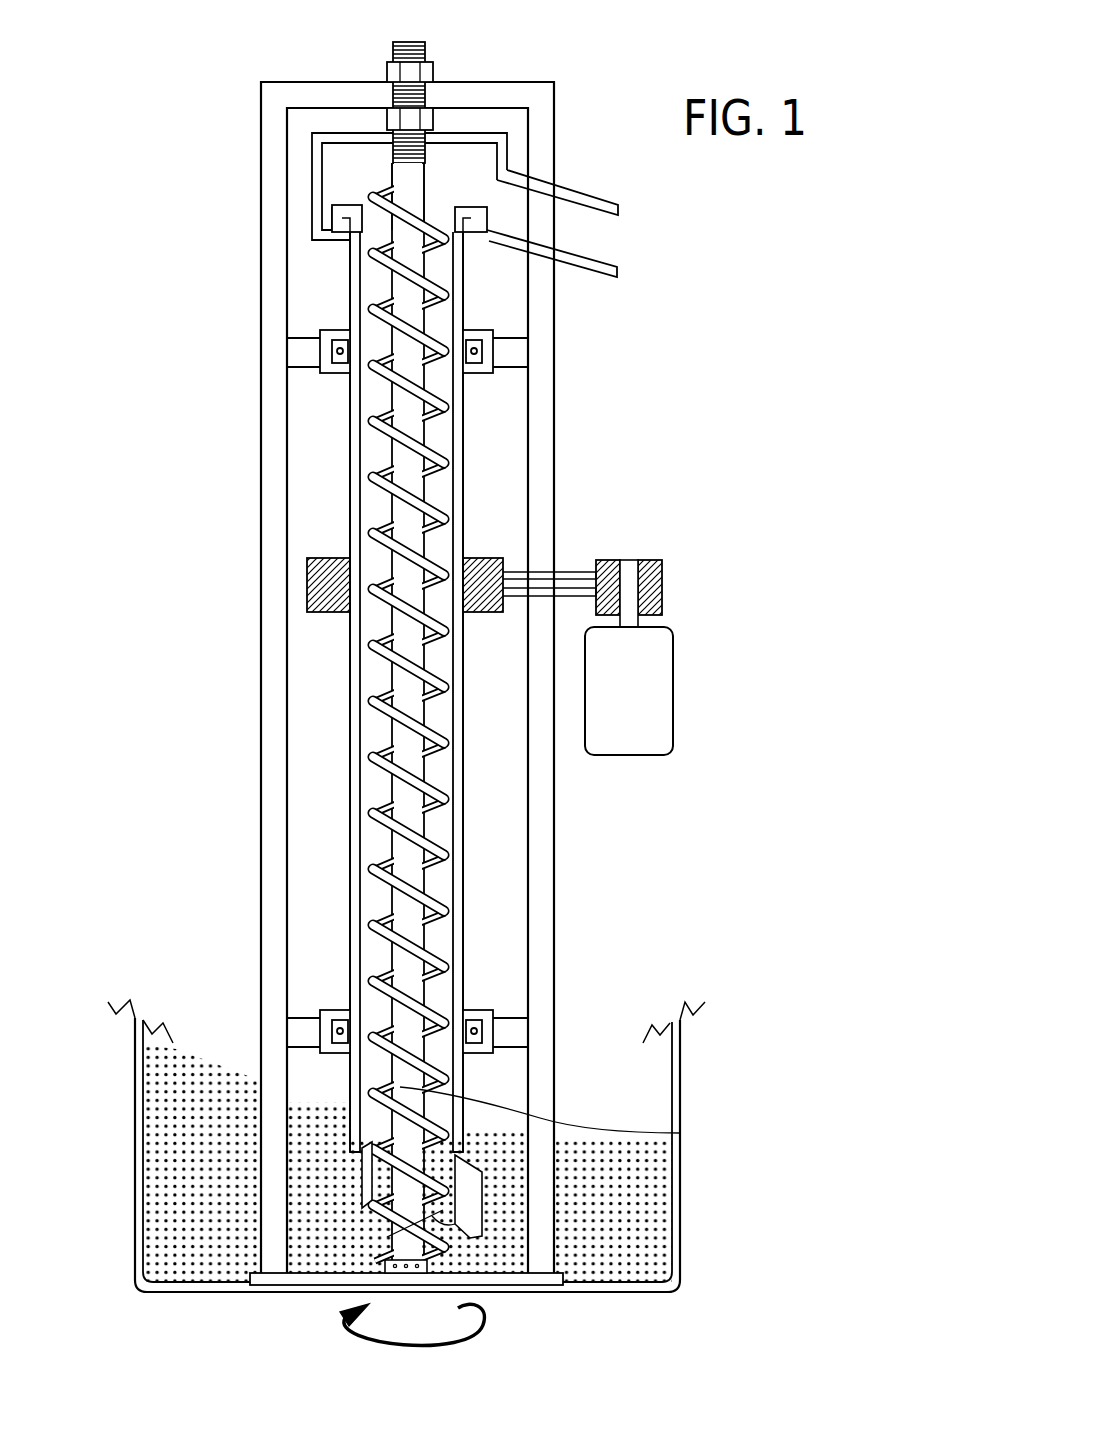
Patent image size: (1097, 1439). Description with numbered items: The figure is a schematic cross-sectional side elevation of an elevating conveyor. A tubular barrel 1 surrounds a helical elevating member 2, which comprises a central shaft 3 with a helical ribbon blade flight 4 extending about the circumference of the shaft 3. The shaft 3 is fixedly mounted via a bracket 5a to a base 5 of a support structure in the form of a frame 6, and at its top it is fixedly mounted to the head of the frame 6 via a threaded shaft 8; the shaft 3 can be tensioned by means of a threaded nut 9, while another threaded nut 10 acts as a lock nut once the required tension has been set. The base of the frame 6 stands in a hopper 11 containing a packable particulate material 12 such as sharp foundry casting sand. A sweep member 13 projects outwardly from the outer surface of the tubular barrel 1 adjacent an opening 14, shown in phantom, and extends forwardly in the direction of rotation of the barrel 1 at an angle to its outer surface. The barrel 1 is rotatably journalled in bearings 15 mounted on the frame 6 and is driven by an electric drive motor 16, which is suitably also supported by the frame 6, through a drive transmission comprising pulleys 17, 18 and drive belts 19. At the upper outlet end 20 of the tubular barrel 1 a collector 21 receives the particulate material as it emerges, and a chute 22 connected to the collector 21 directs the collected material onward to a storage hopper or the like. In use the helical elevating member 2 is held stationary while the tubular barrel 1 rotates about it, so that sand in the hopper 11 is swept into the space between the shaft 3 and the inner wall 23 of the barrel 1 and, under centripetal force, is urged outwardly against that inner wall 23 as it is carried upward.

The tubular barrel 1 is at (460, 437).
The helical elevating member 2 is at (400, 462).
The central shaft 3 is at (398, 745).
The helical ribbon blade flight 4 is at (437, 512).
The base 5 is at (502, 1280).
The bracket 5a is at (417, 1270).
The frame 6 is at (541, 880).
The threaded shaft 8 is at (395, 52).
The threaded nut 9 is at (432, 72).
The threaded nut 10 is at (385, 122).
The hopper 11 is at (680, 1091).
The packable particulate material 12 is at (208, 1190).
The sweep member 13 is at (480, 1192).
The opening 14 is at (387, 1237).
The bearings 15 is at (317, 337).
The electric drive motor 16 is at (645, 692).
The pulley 17 is at (662, 588).
The pulley 18 is at (568, 577).
The drive belts 19 is at (657, 560).
The upper outlet end 20 is at (438, 213).
The collector 21 is at (313, 197).
The chute 22 is at (583, 197).
The inner wall 23 is at (680, 1133).